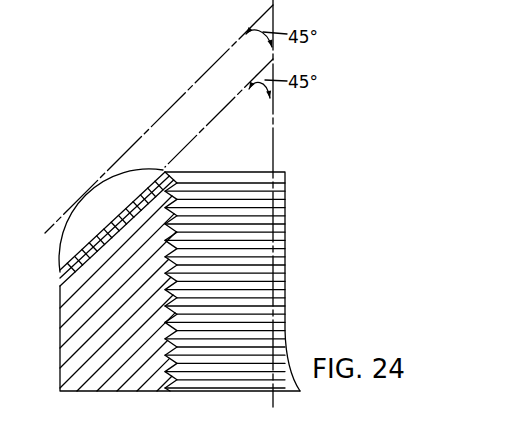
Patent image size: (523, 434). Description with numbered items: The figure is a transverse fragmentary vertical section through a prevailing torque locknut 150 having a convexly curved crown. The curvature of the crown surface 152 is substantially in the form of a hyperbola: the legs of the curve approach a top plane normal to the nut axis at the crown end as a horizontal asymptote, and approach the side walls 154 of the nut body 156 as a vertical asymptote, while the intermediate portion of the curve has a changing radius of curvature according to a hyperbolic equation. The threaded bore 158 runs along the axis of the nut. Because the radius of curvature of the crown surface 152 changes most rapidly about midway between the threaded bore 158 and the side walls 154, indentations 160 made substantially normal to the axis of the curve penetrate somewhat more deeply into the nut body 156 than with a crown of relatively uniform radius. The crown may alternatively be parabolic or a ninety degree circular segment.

The locknut 150 is at (245, 182).
The crown surface 152 is at (127, 172).
The side walls 154 is at (60, 315).
The nut body 156 is at (70, 367).
The threaded bore 158 is at (179, 340).
The indentations 160 is at (103, 229).